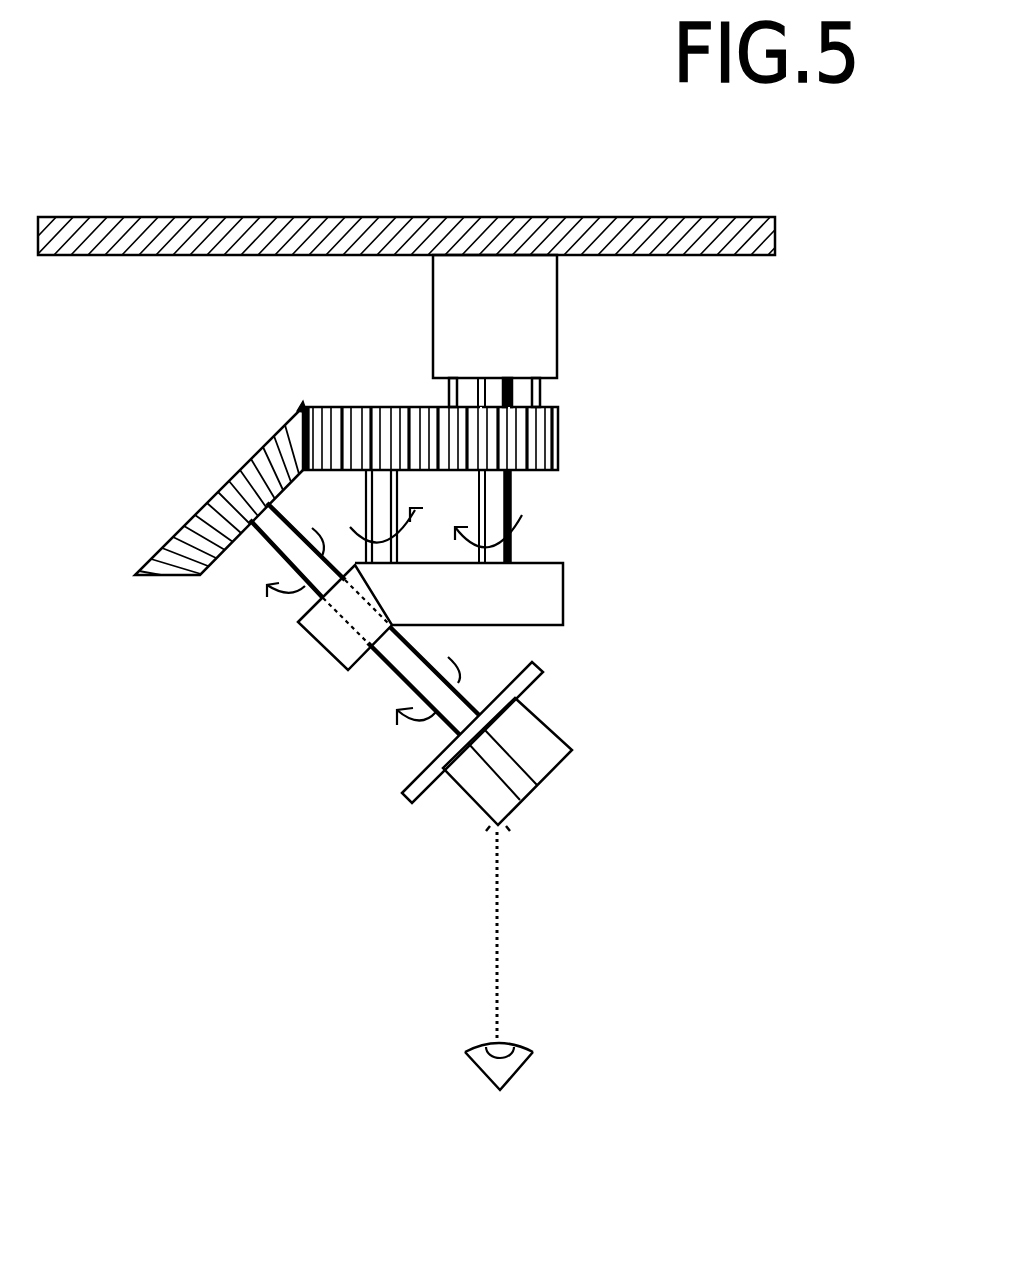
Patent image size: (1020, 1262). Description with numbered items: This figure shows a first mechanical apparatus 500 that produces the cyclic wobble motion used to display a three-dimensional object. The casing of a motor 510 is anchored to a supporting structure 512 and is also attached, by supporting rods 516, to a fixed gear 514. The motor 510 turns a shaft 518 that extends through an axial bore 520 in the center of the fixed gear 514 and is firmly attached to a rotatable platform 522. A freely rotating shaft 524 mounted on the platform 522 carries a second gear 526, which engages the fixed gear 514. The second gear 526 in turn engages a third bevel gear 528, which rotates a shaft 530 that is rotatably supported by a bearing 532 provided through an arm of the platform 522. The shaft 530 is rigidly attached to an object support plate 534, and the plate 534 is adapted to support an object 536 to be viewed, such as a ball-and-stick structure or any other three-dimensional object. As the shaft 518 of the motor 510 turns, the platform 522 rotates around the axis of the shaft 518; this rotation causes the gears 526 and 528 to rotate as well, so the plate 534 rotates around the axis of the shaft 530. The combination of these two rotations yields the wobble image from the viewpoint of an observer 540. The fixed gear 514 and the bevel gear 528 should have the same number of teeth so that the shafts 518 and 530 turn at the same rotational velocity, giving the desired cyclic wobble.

The mechanical apparatus 500 is at (333, 113).
The motor 510 is at (543, 292).
The supporting structure 512 is at (345, 232).
The fixed gear 514 is at (548, 450).
The supporting rods 516 is at (447, 395).
The shaft 518 is at (510, 485).
The axial bore 520 is at (512, 422).
The rotatable platform 522 is at (550, 588).
The freely rotating shaft 524 is at (368, 494).
The second gear 526 is at (360, 420).
The third (bevel) gear 528 is at (165, 578).
The shaft 530 is at (275, 548).
The bearing 532 is at (337, 625).
The object support plate 534 is at (403, 793).
The object 536 is at (572, 750).
The observer 540 is at (470, 1060).